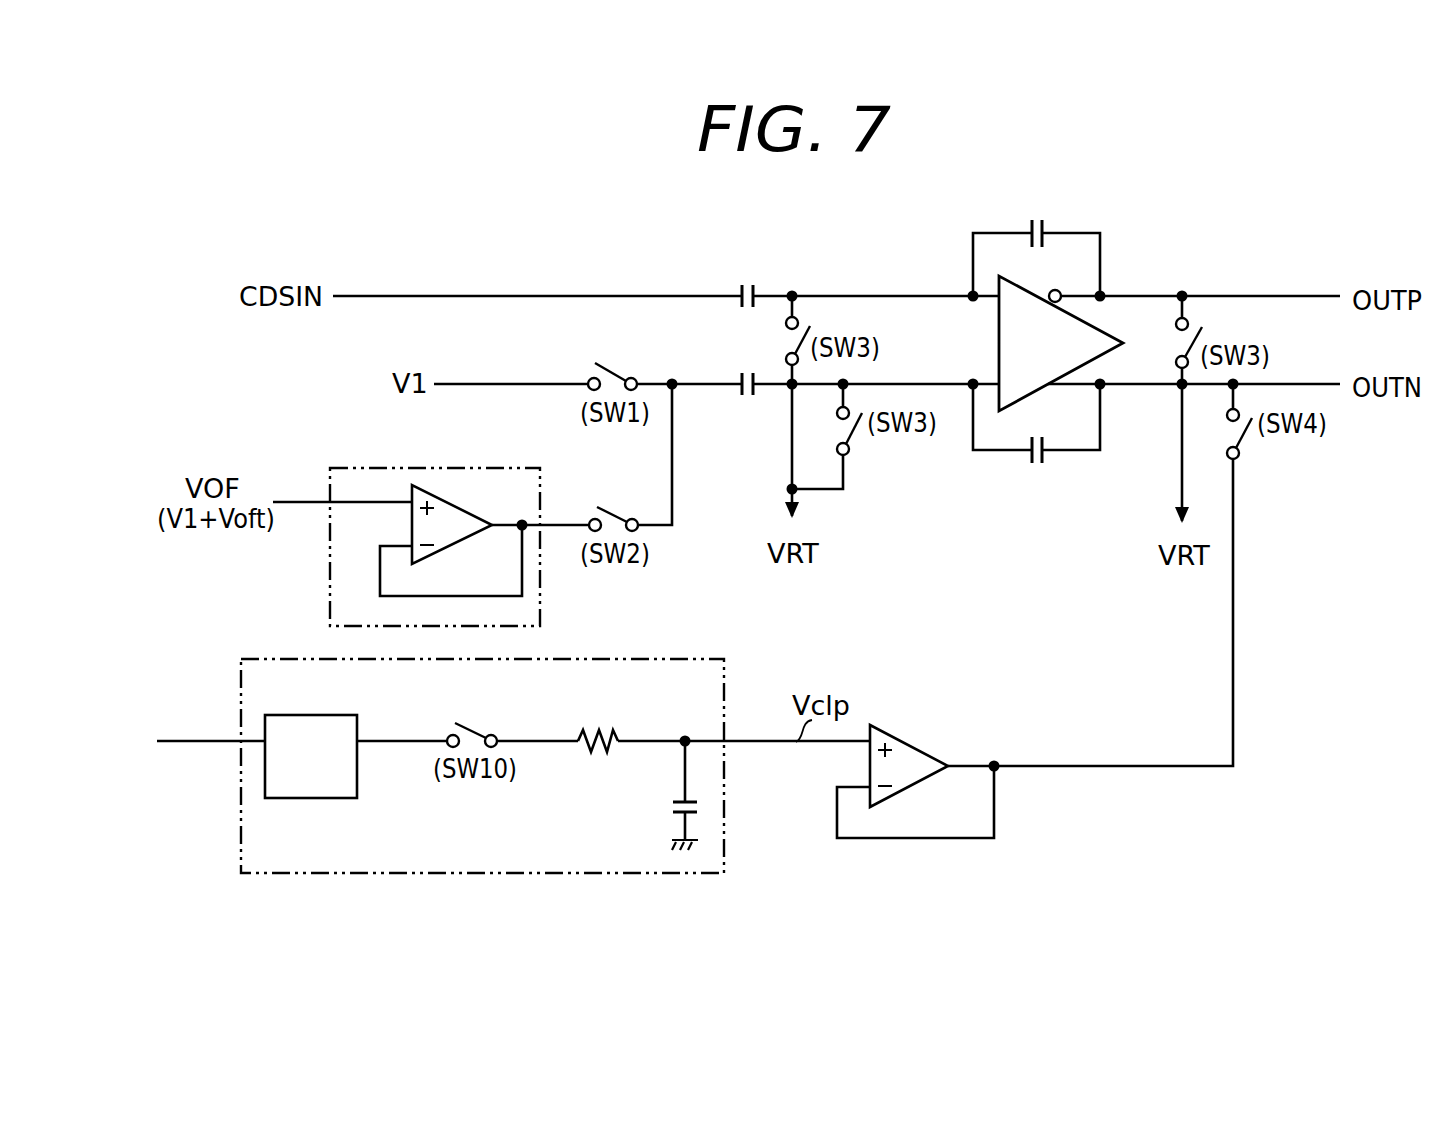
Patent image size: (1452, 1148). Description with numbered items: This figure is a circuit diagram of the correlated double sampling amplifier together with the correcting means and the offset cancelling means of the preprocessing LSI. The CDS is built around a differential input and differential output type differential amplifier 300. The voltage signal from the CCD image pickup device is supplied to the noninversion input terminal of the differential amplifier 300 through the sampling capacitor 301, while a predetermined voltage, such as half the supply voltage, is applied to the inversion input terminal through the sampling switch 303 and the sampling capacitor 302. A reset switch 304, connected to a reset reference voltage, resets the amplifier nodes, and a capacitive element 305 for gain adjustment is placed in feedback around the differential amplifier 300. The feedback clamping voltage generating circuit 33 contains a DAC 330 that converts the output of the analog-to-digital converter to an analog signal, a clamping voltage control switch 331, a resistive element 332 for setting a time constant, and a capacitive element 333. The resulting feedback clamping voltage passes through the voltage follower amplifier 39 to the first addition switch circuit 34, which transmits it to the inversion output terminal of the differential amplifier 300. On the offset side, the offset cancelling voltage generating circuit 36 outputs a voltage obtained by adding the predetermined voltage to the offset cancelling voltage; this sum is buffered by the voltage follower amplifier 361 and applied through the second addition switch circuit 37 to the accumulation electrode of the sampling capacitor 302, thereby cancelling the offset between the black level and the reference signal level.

The differential amplifier 300 is at (1036, 290).
The sampling capacitor 301 is at (746, 285).
The sampling capacitor 302 is at (748, 397).
The sampling switch 303 is at (614, 362).
The reset switch 304 is at (806, 322).
The capacitive element 305 is at (1030, 222).
The feedback clamping voltage generating circuit 33 is at (690, 659).
The DAC 330 is at (325, 715).
The clamping voltage control switch 331 is at (470, 722).
The resistive element 332 is at (604, 731).
The capacitive element 333 is at (672, 806).
The first addition switch circuit 34 is at (1243, 434).
The offset cancelling voltage generating circuit 36 is at (503, 468).
The voltage follower amplifier 361 is at (456, 498).
The second addition switch circuit 37 is at (609, 505).
The voltage follower amplifier 39 is at (914, 742).